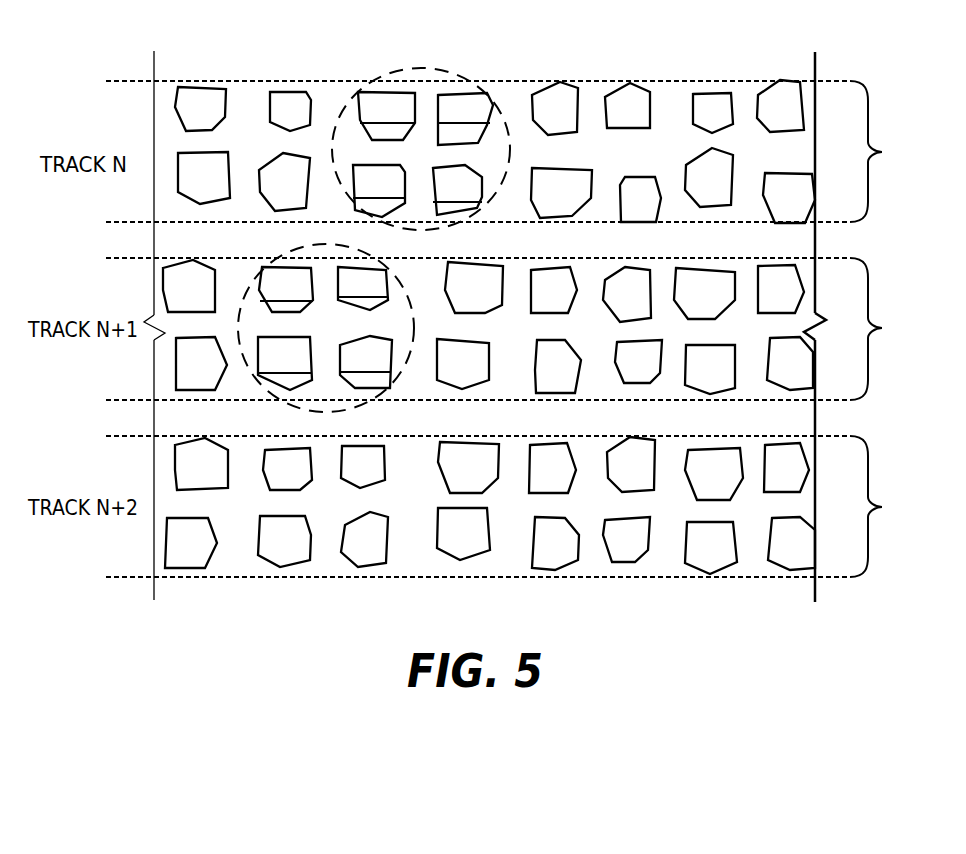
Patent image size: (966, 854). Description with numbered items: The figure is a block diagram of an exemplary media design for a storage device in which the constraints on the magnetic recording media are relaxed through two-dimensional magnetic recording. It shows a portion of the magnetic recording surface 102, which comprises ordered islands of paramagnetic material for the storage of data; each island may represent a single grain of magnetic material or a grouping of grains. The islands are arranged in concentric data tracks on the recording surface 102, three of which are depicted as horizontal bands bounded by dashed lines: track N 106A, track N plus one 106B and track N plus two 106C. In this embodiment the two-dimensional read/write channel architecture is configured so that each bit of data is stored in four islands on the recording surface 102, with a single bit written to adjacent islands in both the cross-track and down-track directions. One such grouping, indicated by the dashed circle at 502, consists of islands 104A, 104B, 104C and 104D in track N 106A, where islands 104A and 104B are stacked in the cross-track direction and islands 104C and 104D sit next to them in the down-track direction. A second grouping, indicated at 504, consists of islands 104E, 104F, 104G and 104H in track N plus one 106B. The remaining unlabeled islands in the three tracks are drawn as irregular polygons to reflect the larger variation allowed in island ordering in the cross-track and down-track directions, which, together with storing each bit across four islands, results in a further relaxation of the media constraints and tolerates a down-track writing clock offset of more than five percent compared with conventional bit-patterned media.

The magnetic recording surface 102 is at (578, 251).
The island 104A is at (386, 116).
The island 104B is at (379, 191).
The island 104C is at (465, 119).
The island 104D is at (457, 190).
The island 104E is at (286, 289).
The island 104F is at (363, 288).
The island 104G is at (285, 363).
The island 104H is at (366, 362).
The track N 106A is at (898, 151).
The track N+1 106B is at (897, 329).
The track N+2 106C is at (898, 506).
The four-island bit grouping in track N 502 is at (432, 67).
The four-island bit grouping in track N+1 504 is at (380, 395).